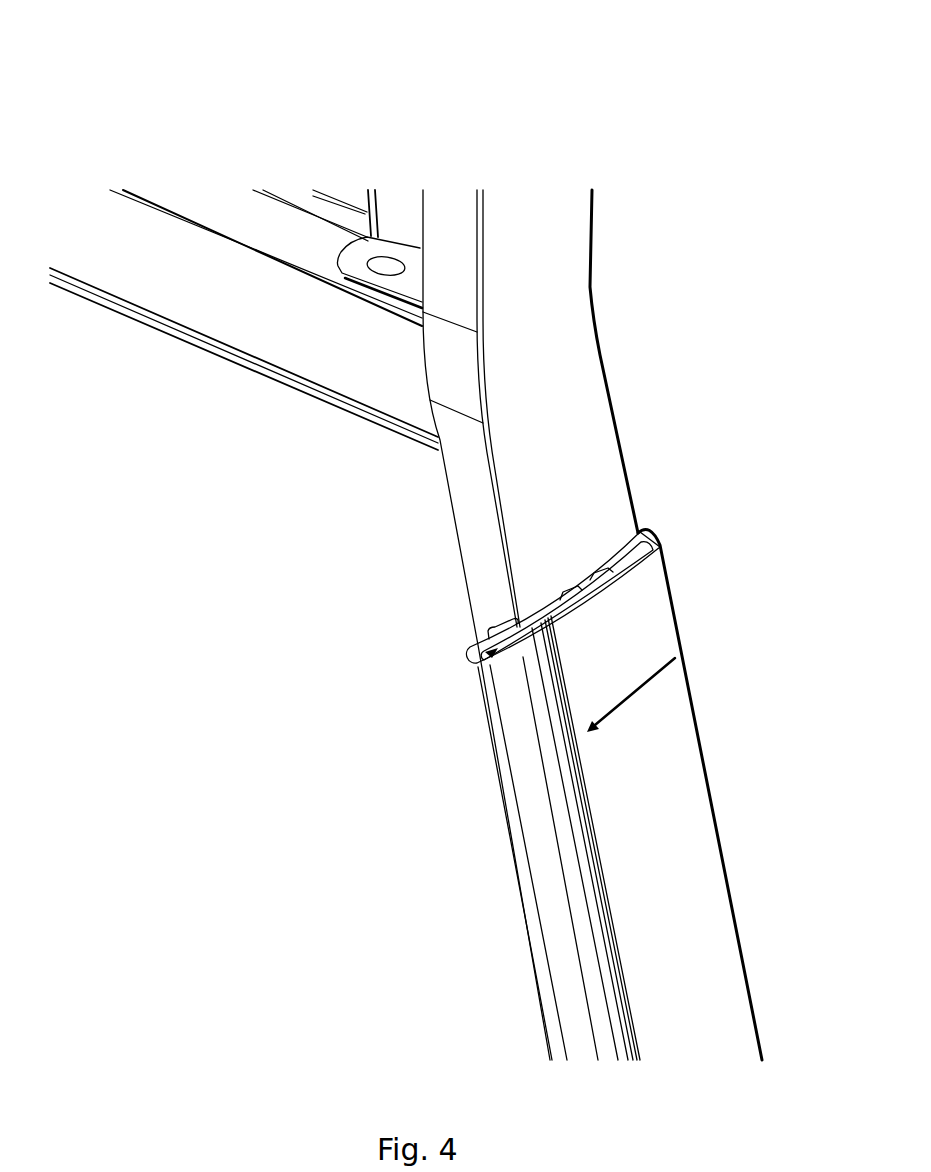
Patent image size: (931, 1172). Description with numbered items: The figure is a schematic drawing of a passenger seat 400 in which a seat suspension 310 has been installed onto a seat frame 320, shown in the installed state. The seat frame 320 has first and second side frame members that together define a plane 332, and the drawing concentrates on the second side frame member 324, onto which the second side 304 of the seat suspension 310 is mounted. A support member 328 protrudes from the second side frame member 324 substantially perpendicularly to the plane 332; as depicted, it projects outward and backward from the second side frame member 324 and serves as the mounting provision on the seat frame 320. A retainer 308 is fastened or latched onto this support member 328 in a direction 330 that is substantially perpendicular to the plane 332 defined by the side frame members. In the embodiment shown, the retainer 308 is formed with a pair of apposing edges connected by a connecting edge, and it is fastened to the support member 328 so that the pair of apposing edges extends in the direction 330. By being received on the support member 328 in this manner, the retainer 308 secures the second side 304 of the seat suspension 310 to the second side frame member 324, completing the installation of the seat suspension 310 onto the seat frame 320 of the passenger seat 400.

The passenger seat 400 is at (87, 89).
The seat frame 320 is at (466, 172).
The second side frame member 324 is at (632, 448).
The plane 332 is at (216, 546).
The support member 328 is at (510, 625).
The retainer 308 is at (462, 686).
The direction 330 is at (631, 695).
The seat suspension 310 is at (740, 800).
The second side 304 is at (656, 1052).